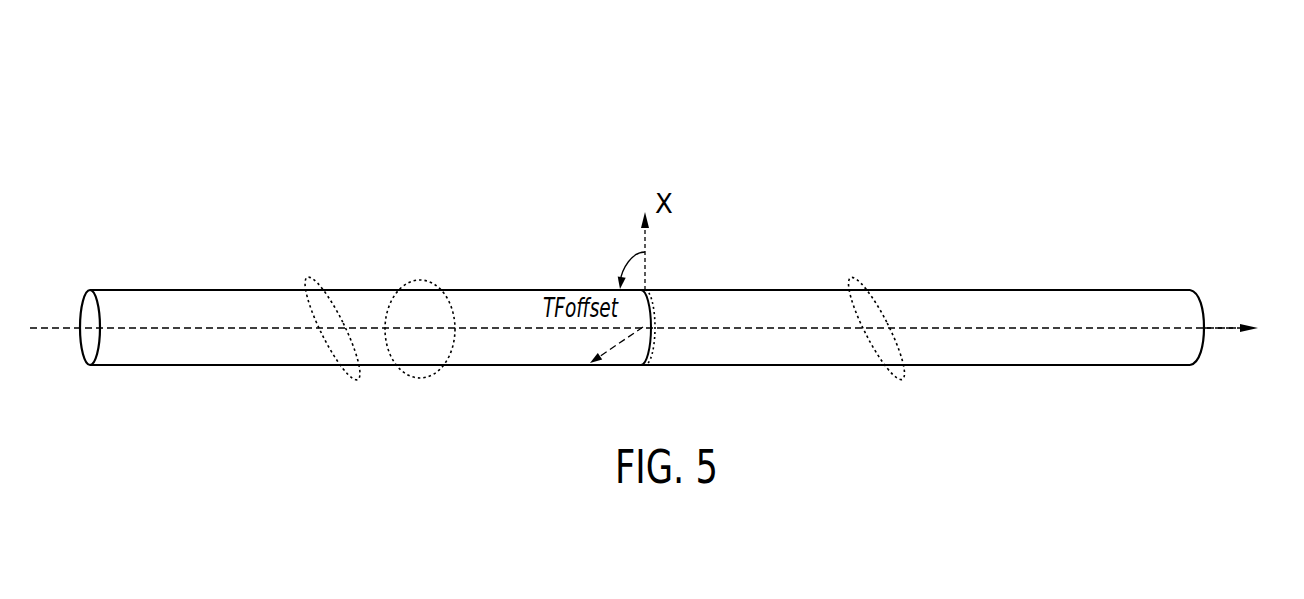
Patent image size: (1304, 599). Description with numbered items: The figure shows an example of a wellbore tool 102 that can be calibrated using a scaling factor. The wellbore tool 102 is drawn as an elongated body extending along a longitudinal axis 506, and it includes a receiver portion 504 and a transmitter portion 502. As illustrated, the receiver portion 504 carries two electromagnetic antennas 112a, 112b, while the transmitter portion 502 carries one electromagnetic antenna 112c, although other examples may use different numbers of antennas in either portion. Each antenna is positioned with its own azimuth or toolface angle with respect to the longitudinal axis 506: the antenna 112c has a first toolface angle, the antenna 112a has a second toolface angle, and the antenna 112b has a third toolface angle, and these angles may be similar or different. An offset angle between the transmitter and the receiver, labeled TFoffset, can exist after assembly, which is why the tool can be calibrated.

The wellbore tool 102 is at (126, 129).
The receiver portion 504 is at (128, 266).
The transmitter portion 502 is at (1085, 264).
The longitudinal axis 506 is at (1218, 322).
The electromagnetic antenna 112a is at (307, 277).
The electromagnetic antenna 112b is at (417, 280).
The electromagnetic antenna 112c is at (850, 277).